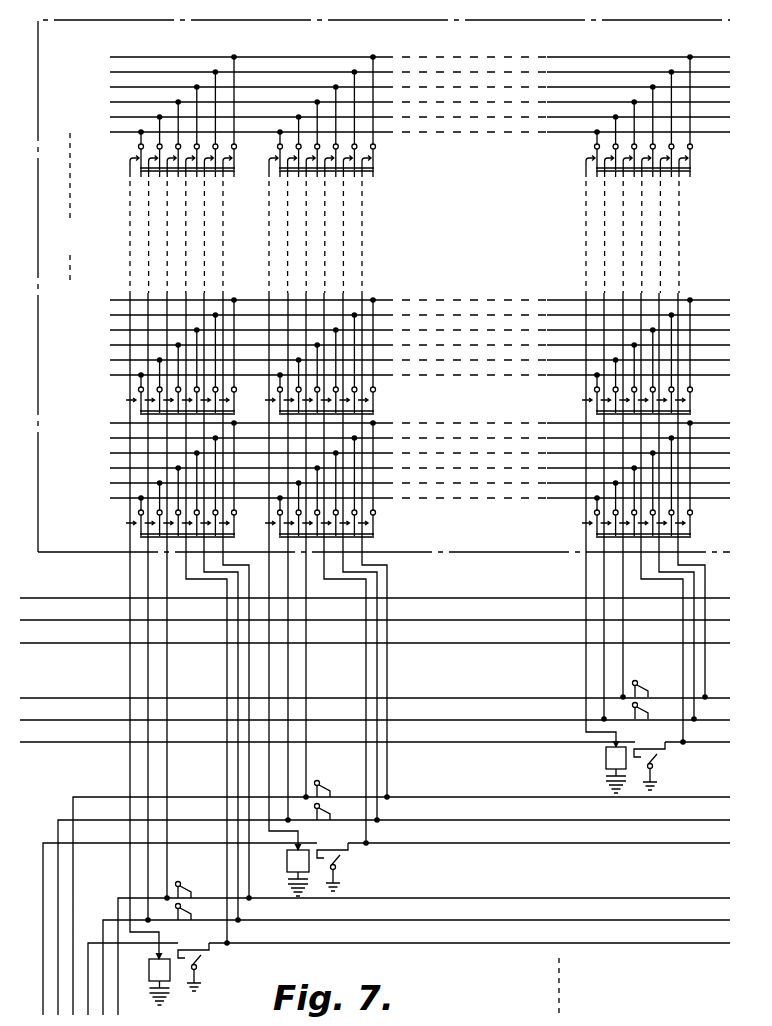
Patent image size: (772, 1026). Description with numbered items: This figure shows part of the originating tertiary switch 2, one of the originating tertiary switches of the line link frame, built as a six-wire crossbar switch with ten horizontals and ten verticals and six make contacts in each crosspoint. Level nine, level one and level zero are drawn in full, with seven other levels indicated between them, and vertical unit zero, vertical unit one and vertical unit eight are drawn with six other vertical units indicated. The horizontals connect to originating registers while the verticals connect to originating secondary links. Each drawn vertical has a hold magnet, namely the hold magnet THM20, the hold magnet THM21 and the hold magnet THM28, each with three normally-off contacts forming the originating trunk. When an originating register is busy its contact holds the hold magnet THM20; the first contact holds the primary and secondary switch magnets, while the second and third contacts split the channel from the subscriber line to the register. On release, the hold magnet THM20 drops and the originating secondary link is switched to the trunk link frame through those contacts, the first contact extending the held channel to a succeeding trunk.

The originating tertiary switch 2 is at (384, 286).
The hold magnet THM20 is at (175, 944).
The hold magnet THM21 is at (311, 839).
The hold magnet THM28 is at (624, 737).